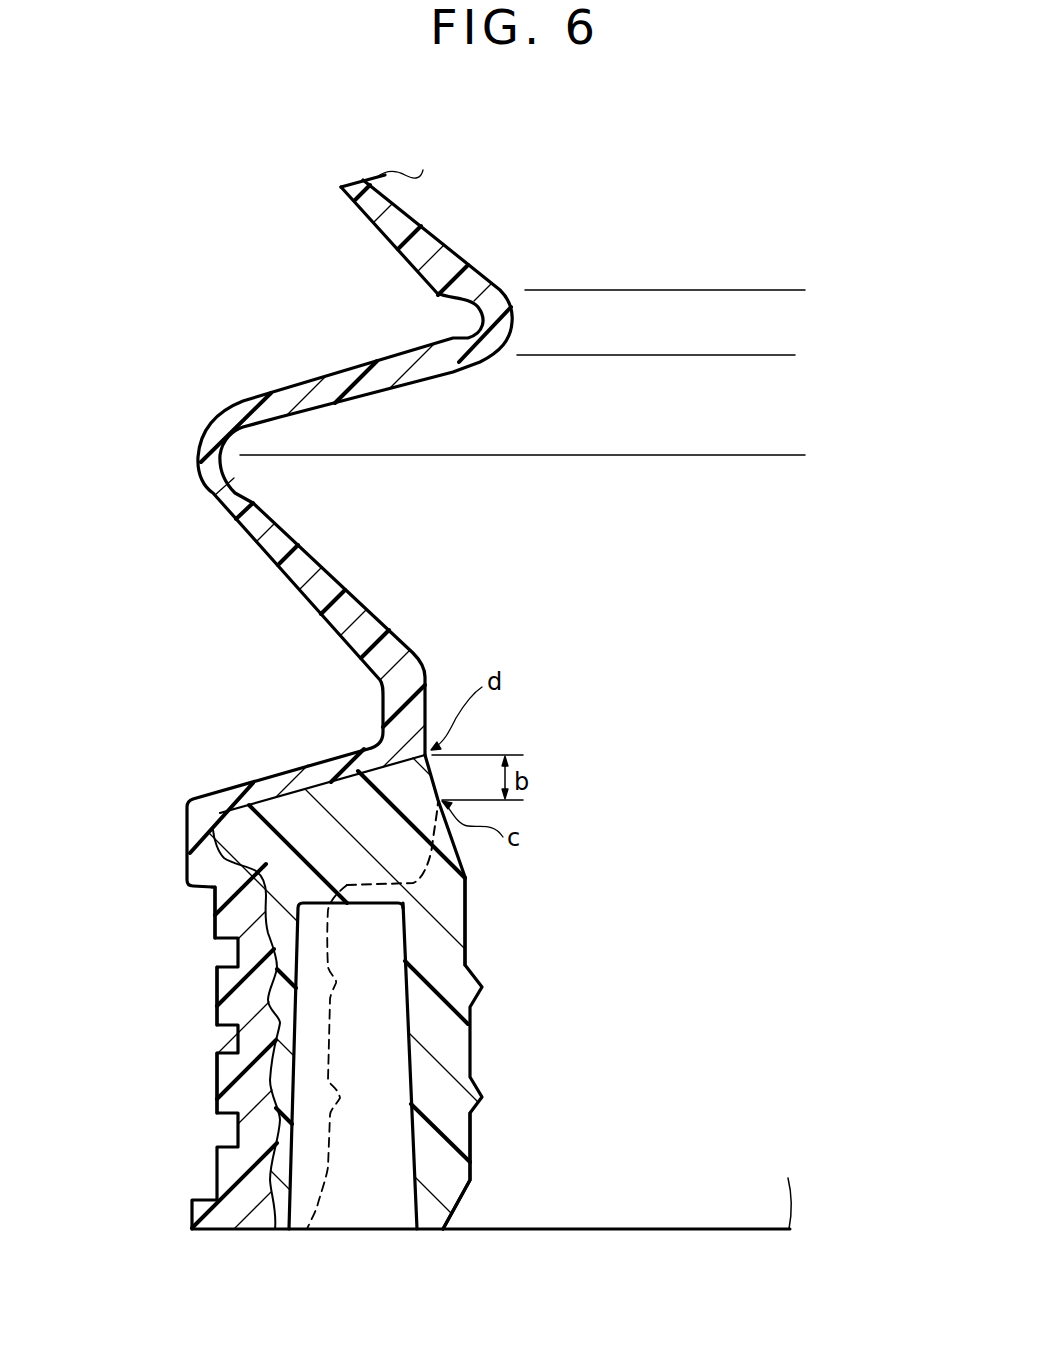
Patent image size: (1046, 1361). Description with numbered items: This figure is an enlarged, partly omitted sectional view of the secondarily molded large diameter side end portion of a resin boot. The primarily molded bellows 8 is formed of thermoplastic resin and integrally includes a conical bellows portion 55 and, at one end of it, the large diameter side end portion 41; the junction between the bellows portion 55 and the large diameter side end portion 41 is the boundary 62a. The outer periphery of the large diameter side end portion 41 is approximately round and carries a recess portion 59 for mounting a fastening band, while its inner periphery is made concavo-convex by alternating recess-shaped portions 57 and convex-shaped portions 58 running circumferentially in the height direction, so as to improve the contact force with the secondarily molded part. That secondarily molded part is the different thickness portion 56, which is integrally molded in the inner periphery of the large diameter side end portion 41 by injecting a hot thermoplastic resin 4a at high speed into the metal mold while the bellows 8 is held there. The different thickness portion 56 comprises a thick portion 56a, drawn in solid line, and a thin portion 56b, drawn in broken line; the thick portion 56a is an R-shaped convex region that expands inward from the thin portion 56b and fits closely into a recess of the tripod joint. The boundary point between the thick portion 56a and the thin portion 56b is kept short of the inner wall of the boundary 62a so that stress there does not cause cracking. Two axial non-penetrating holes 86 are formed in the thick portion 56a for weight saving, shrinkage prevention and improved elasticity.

The bellows 8 is at (343, 201).
The bellows portion 55 is at (228, 402).
The boundary 62a is at (381, 703).
The different thickness portion 56 is at (474, 1043).
The thick portion 56a is at (476, 947).
The thin portion 56b is at (430, 883).
The thermoplastic resin 4a is at (448, 1123).
The large diameter side end portion 41 is at (192, 1213).
The recess portion 59 is at (214, 886).
The convex-shaped portion 58 is at (237, 938).
The recess-shaped portion 57 is at (216, 1013).
The non-penetrating hole 86 is at (416, 1200).